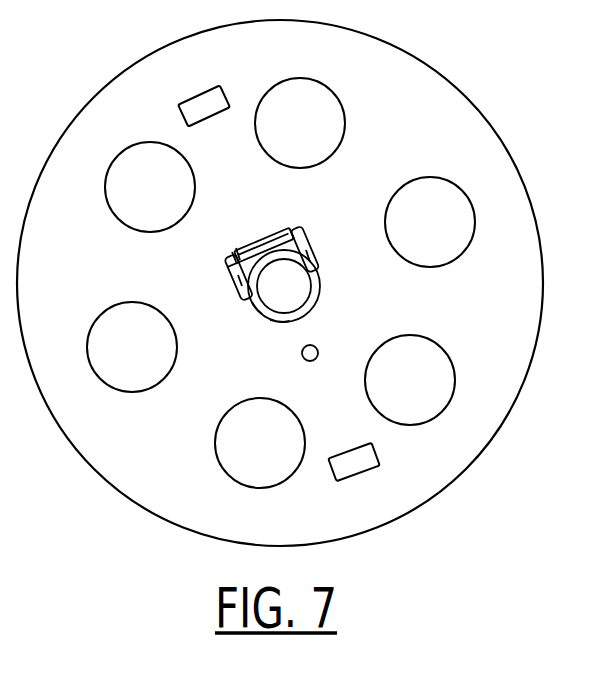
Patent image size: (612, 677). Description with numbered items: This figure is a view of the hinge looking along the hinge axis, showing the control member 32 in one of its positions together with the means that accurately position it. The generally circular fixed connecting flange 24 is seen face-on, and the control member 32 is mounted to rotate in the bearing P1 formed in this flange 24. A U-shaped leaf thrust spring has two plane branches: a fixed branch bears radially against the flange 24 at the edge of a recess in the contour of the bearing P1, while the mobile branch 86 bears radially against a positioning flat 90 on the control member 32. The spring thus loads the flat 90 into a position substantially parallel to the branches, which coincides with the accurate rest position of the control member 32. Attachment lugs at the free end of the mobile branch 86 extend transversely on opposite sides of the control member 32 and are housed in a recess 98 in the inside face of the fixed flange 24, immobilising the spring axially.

The connecting flange 24 is at (428, 121).
The control member 32 is at (287, 308).
The second branch 86 is at (252, 303).
The positioning flat 90 is at (320, 277).
The recess 98 is at (278, 310).
The bearing P1 is at (308, 296).